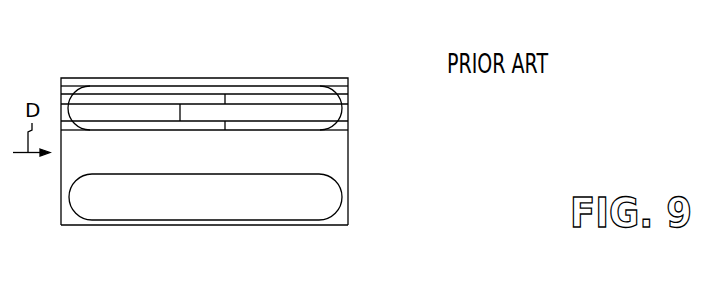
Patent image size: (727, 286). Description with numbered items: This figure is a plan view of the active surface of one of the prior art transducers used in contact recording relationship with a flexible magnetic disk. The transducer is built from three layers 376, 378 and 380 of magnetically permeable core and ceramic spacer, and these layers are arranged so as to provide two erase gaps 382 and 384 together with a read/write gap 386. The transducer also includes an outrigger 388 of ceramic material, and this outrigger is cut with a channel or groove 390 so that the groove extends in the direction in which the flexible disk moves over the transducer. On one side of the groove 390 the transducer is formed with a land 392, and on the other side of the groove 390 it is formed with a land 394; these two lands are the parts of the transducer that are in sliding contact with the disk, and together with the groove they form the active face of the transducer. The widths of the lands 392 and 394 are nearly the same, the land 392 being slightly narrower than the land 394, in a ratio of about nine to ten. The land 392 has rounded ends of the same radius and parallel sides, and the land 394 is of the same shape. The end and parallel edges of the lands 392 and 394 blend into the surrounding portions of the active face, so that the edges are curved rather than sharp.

The layer 376 is at (204, 197).
The layer 378 is at (97, 113).
The layer 380 is at (204, 64).
The erase gap 382 is at (227, 93).
The erase gap 384 is at (226, 124).
The read/write gap 386 is at (179, 109).
The outrigger 388 is at (204, 249).
The groove 390 is at (239, 151).
The land 392 is at (238, 106).
The land 394 is at (243, 197).